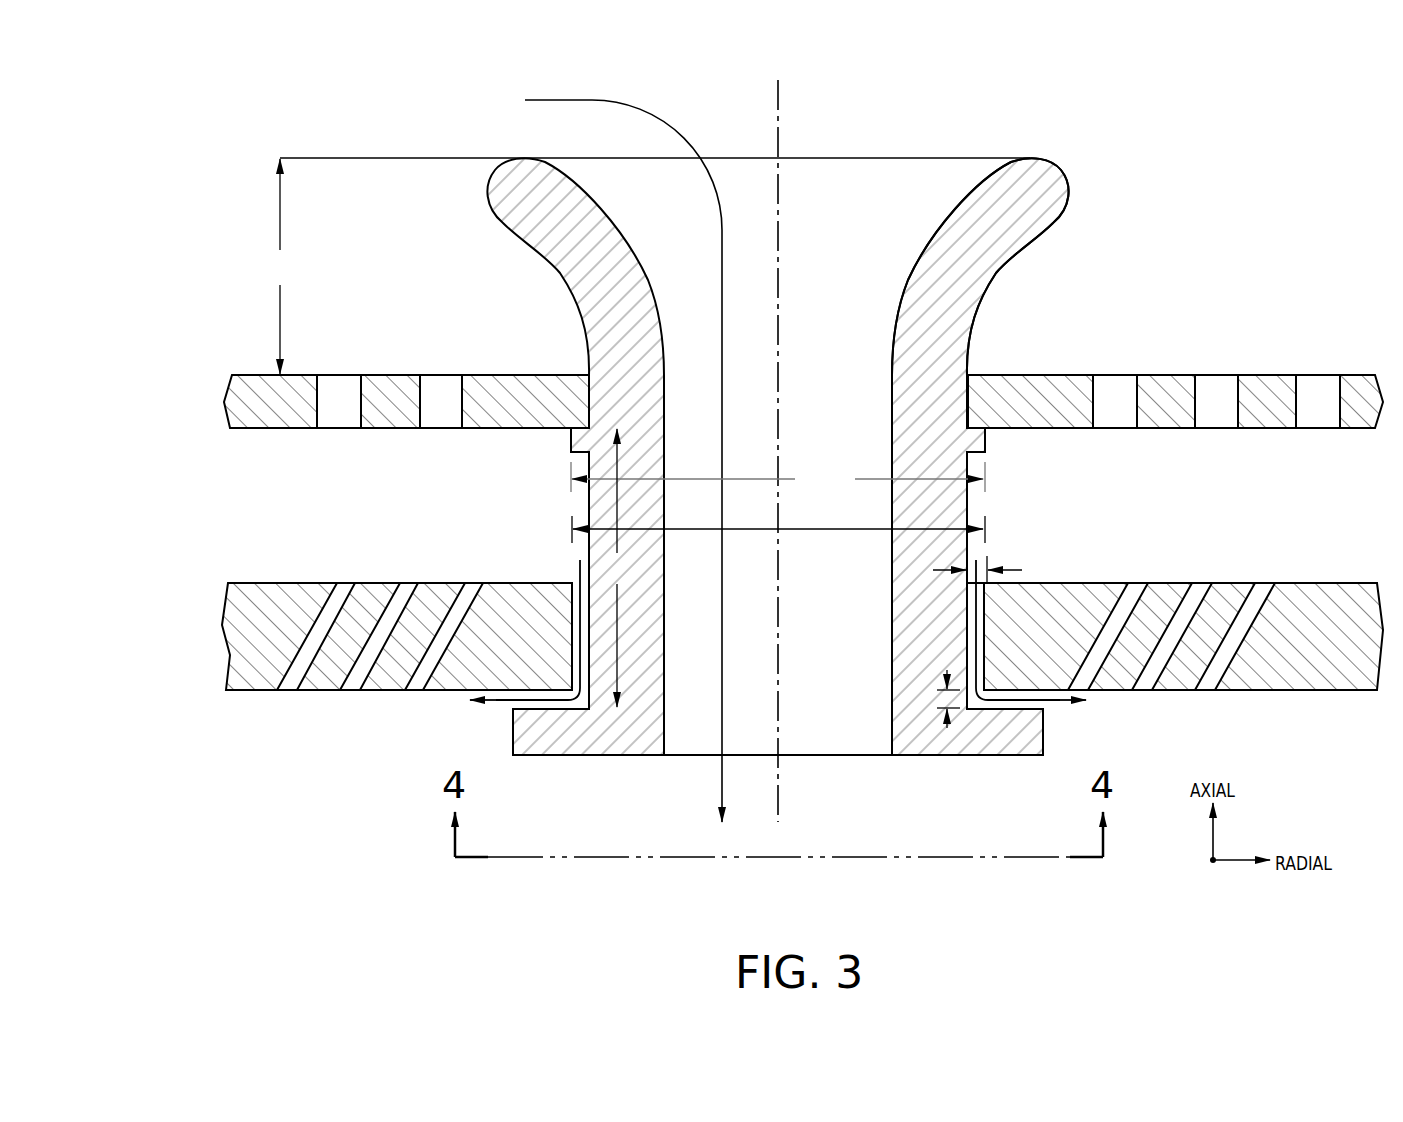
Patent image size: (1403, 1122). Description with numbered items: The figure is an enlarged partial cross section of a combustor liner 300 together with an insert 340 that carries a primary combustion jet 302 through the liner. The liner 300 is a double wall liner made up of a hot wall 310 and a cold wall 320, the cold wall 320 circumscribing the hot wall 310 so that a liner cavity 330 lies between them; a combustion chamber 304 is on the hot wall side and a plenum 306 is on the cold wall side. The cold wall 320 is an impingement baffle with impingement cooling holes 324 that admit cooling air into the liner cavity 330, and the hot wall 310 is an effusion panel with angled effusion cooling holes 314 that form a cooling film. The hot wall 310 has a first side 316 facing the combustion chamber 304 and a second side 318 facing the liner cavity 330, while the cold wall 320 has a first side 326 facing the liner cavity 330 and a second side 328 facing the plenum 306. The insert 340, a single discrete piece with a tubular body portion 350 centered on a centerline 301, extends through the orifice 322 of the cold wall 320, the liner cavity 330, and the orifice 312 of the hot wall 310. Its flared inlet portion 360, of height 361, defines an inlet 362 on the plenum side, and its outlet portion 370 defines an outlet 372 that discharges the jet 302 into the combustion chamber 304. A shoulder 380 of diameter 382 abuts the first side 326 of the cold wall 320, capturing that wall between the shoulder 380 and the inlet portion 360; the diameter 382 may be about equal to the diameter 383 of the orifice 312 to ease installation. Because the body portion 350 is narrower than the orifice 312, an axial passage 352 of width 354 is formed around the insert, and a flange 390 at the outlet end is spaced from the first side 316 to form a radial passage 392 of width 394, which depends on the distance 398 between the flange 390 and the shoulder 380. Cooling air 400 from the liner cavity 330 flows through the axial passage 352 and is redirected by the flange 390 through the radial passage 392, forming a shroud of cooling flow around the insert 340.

The liner 300 is at (183, 332).
The centerline 301 is at (779, 102).
The primary combustion jet 302 is at (722, 790).
The combustion chamber 304 is at (519, 823).
The plenum 306 is at (1131, 320).
The hot wall 310 is at (228, 620).
The orifice 312 is at (568, 598).
The effusion cooling holes 314 is at (343, 583).
The first side 316 is at (1320, 692).
The second side 318 is at (1330, 583).
The cold wall 320 is at (232, 402).
The orifice 322 is at (588, 375).
The impingement cooling holes 324 is at (343, 375).
The first side 326 is at (1358, 428).
The second side 328 is at (1358, 375).
The liner cavity 330 is at (261, 502).
The insert 340 is at (473, 152).
The body portion 350 is at (963, 497).
The axial passage 352 is at (973, 637).
The width 354 is at (1022, 570).
The inlet portion 360 is at (1046, 172).
The height 361 is at (284, 266).
The inlet 362 is at (928, 158).
The outlet portion 370 is at (905, 757).
The outlet 372 is at (687, 757).
The shoulder 380 is at (985, 440).
The diameter 382 is at (778, 479).
The diameter 383 is at (768, 531).
The flange 390 is at (1000, 757).
The radial passage 392 is at (1023, 690).
The width 394 is at (938, 700).
The distance 398 is at (616, 568).
The cooling air 400 is at (490, 704).